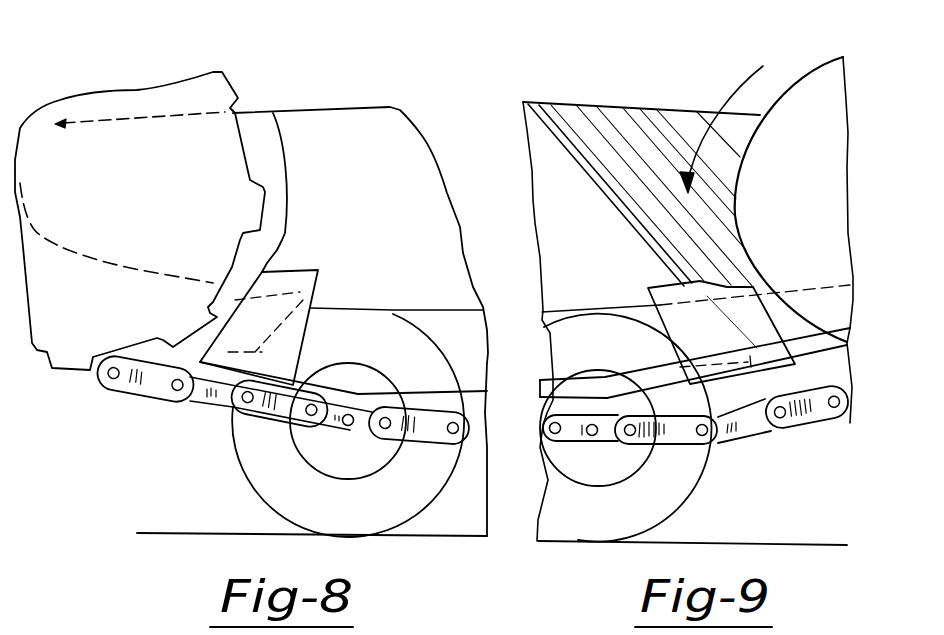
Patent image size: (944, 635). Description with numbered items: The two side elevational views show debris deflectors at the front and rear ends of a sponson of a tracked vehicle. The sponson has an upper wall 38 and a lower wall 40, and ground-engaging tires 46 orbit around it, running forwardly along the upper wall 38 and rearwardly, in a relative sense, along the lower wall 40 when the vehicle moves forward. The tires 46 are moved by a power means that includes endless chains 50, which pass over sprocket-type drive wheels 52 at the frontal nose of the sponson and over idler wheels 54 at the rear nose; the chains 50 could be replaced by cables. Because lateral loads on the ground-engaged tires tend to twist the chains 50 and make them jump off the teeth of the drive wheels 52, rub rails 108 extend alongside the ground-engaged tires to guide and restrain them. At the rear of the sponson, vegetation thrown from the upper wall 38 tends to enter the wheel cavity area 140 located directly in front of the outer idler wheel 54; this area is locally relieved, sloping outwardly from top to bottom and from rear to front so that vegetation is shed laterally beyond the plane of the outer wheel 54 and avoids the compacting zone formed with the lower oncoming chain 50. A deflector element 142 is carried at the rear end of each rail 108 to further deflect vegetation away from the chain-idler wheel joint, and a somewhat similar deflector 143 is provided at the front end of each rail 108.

In FIG. 8, the upper wall 38 is at (310, 108).
In FIG. 9, the upper wall 38 is at (569, 103).
In FIG. 8, the lower wall 40 is at (452, 314).
In FIG. 8, the ground-engaging tires 46 is at (255, 490).
In FIG. 9, the ground-engaging tires 46 is at (696, 487).
In FIG. 8, the endless chains 50 is at (146, 392).
In FIG. 9, the endless chains 50 is at (790, 427).
In FIG. 8, the sprocket-type drive wheels 52 is at (145, 118).
In FIG. 9, the idler wheels 54 is at (808, 70).
In FIG. 8, the rub rails 108 is at (493, 383).
In FIG. 9, the rub rails 108 is at (650, 377).
In FIG. 9, the wheel cavity area 140 is at (641, 128).
In FIG. 9, the deflector element 142 is at (663, 288).
In FIG. 8, the deflector 143 is at (287, 285).